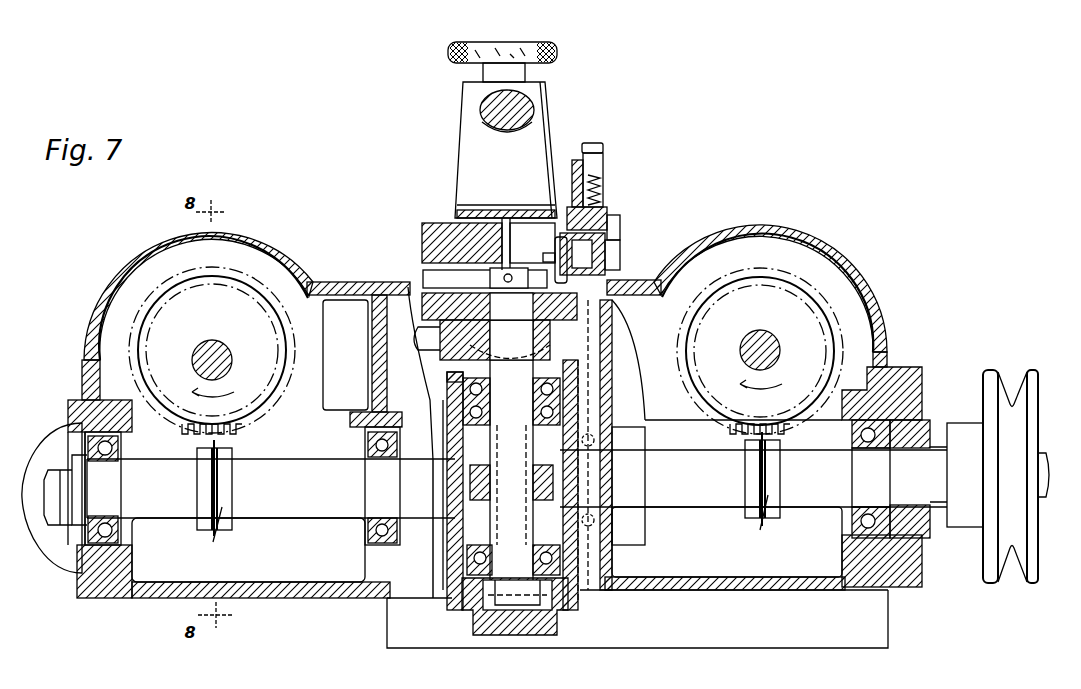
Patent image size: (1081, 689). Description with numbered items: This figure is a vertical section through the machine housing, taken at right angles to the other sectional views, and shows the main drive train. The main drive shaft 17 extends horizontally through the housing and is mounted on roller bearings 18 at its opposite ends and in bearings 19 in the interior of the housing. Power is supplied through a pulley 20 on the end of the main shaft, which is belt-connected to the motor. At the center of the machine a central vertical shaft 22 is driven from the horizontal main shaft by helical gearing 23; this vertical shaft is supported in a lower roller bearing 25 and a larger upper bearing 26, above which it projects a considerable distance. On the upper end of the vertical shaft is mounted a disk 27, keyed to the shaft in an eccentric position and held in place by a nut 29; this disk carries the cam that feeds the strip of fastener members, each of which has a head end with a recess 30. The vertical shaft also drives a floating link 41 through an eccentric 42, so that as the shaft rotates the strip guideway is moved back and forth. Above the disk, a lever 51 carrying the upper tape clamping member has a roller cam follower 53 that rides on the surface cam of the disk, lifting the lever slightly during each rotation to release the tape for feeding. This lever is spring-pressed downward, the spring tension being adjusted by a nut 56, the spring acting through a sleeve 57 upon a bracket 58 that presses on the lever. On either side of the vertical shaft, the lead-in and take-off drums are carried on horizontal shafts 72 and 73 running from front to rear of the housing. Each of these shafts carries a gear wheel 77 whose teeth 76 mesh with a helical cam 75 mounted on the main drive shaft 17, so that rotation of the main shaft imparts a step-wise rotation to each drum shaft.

The main drive shaft 17 is at (287, 510).
The roller bearings 18 is at (120, 452).
The bearings 19 is at (365, 525).
The pulley 20 is at (598, 298).
The central vertical shaft 22 is at (512, 413).
The helical gearing 23 is at (550, 485).
The lower roller bearing 25 is at (488, 510).
The upper bearing 26 is at (465, 392).
The disk 27 is at (572, 312).
The nut 29 is at (503, 270).
The recess 30 is at (1010, 385).
The floating link 41 is at (414, 345).
The eccentric 42 is at (520, 340).
The lever 51 is at (606, 160).
The roller cam follower 53 is at (560, 240).
The nut 56 is at (540, 45).
The sleeve 57 is at (548, 120).
The bracket 58 is at (470, 163).
The shaft 72 is at (222, 352).
The shaft 73 is at (768, 345).
The helical cam 75 is at (205, 520).
The teeth 76 is at (190, 437).
The gear wheel 77 is at (258, 395).